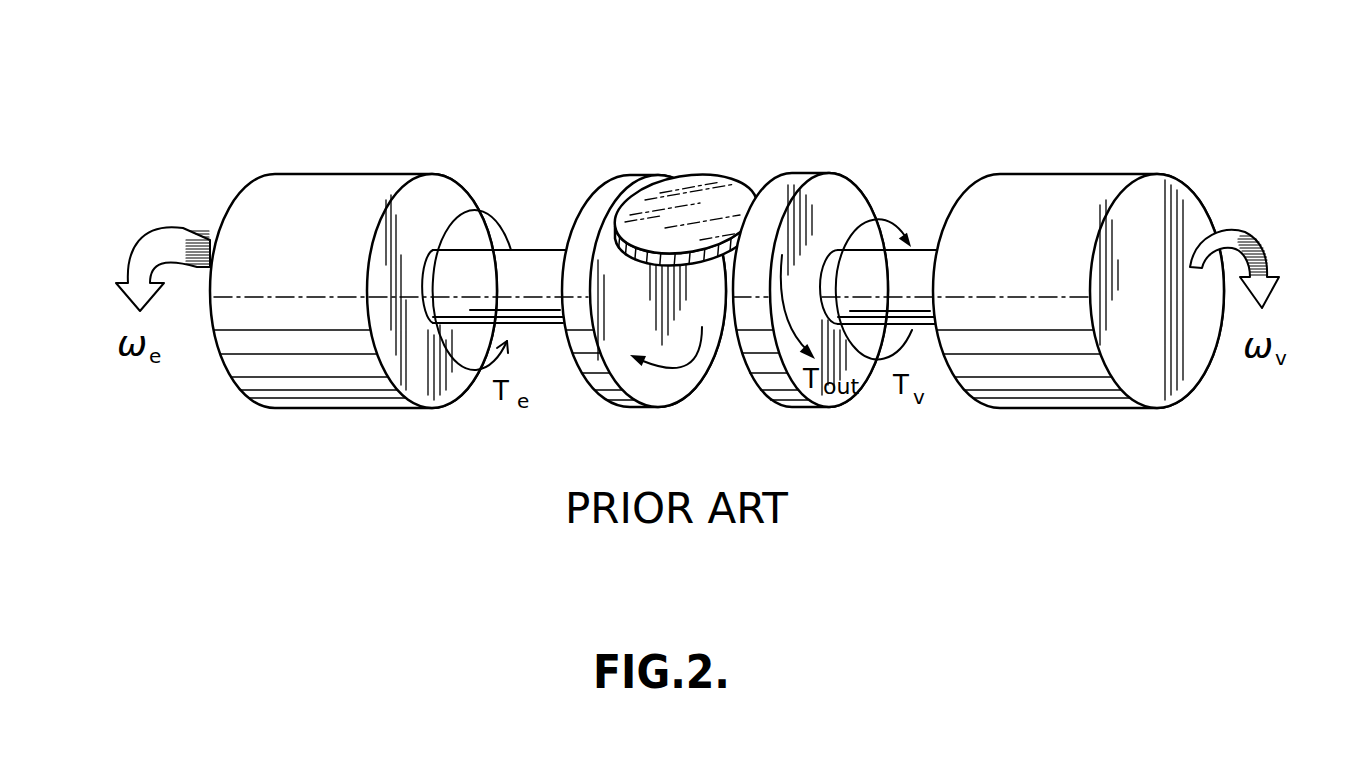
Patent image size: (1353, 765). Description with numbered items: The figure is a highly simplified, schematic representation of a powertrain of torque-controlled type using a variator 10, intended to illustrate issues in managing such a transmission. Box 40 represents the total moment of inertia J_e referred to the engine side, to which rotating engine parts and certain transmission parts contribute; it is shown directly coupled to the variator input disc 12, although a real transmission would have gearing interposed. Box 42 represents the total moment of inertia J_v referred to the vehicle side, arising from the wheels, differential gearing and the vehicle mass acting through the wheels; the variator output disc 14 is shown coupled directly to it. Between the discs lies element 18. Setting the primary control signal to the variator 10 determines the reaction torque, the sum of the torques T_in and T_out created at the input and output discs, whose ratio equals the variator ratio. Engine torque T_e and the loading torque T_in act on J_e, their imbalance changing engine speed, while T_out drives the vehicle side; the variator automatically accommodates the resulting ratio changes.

The variator 10 is at (868, 135).
The variator input disc 12 is at (613, 185).
The variator output disc 14 is at (793, 185).
The clutch plate 18 is at (668, 250).
The box representing engine-side inertia 40 is at (328, 299).
The box representing vehicle-side inertia 42 is at (1058, 287).